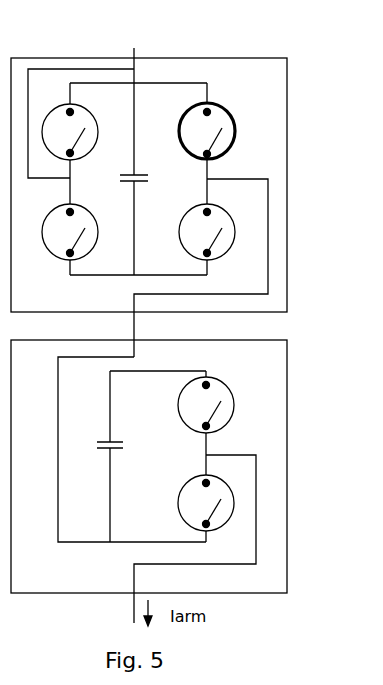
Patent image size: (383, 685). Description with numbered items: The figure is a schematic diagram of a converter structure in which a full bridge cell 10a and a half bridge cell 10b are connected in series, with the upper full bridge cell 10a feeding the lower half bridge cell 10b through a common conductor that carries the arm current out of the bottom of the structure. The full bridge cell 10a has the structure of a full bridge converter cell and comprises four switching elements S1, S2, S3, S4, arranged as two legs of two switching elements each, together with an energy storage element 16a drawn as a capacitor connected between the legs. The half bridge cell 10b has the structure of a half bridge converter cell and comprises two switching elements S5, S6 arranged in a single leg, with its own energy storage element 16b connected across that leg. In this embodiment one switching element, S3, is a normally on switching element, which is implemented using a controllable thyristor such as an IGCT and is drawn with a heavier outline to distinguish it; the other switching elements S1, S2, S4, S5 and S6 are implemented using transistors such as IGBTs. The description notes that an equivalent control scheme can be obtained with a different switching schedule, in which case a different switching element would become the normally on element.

The full bridge cell 10a is at (174, 202).
The half bridge cell 10b is at (174, 481).
The energy storage element 16a is at (162, 177).
The energy storage element 16b is at (121, 447).
The switching element S1 is at (79, 108).
The switching element S2 is at (79, 208).
The normally on switching element S3 is at (222, 116).
The switching element S4 is at (250, 211).
The switching element S5 is at (226, 387).
The switching element S6 is at (242, 482).